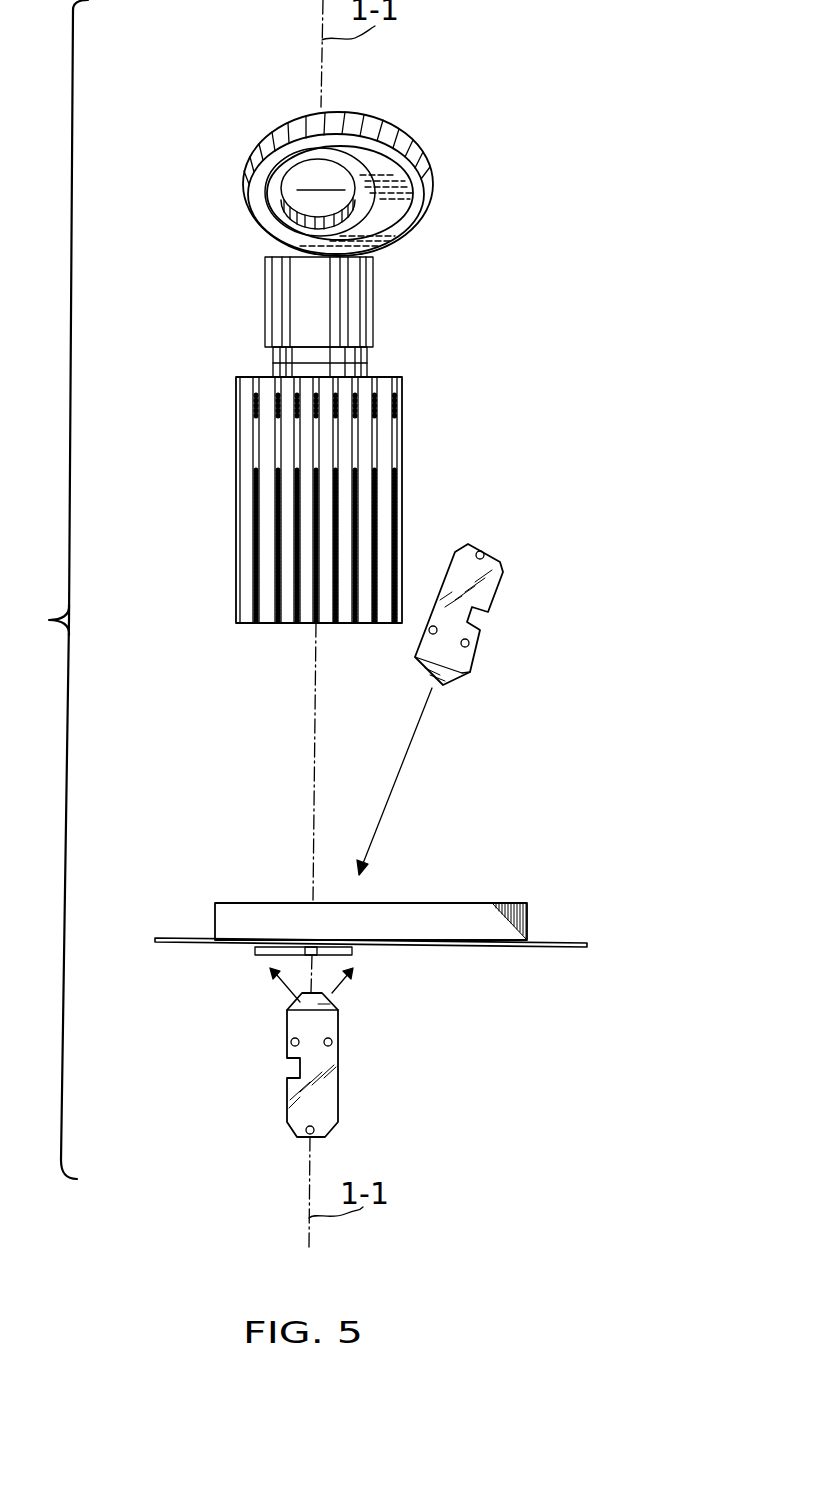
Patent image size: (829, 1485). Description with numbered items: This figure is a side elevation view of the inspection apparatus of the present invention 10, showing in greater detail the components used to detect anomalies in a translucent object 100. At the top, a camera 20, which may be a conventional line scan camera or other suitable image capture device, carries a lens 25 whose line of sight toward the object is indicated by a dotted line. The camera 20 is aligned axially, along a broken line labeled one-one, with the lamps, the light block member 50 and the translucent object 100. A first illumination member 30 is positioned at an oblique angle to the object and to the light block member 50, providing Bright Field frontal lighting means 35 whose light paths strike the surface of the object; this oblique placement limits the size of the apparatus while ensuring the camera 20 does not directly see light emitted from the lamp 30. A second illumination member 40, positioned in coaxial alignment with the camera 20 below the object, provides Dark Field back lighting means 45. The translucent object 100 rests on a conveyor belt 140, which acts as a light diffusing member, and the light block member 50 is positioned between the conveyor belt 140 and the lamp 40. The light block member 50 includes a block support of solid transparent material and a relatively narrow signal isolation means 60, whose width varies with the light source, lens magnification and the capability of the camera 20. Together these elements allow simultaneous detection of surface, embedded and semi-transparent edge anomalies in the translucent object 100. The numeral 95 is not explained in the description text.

The present invention 10 is at (45, 589).
The ring 95 is at (297, 190).
The lens 25 is at (373, 302).
The camera 20 is at (236, 488).
The first illumination member 30 is at (488, 593).
The Bright Field frontal lighting means 35 is at (405, 758).
The translucent object 100 is at (527, 918).
The conveyor belt 140 is at (587, 945).
The light block member 50 is at (257, 950).
The signal isolation means 60 is at (275, 997).
The Dark Field back lighting means 45 is at (334, 991).
The second illumination member 40 is at (338, 1117).